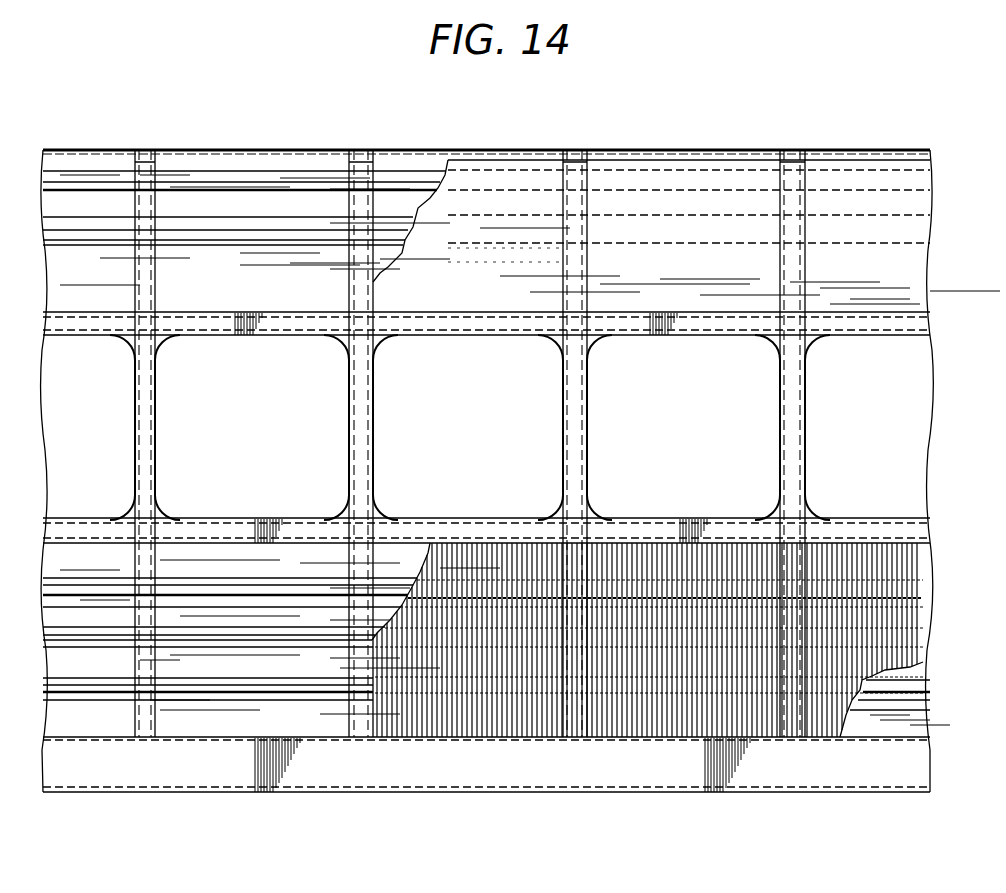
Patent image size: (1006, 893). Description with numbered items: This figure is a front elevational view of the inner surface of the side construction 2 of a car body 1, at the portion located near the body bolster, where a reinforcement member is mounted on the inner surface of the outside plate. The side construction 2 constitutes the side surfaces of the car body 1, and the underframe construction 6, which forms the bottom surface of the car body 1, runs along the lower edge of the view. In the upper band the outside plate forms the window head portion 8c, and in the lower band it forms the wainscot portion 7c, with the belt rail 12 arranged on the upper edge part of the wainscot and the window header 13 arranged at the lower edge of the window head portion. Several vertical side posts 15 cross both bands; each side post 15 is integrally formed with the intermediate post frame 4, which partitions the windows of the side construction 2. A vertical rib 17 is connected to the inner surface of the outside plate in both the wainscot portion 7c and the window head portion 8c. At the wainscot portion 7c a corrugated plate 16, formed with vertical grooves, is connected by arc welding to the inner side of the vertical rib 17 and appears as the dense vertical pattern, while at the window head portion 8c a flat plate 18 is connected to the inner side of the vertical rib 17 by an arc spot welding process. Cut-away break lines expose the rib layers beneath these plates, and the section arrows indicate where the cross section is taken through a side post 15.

The car body 1 is at (192, 148).
The side construction 2 is at (868, 197).
The intermediate post 4 is at (561, 407).
The underframe construction 6 is at (473, 770).
The wainscot portion 7c is at (220, 717).
The window head portion 8c is at (425, 160).
The belt rail 12 is at (716, 528).
The window header 13 is at (625, 335).
The side post 15 is at (336, 200).
The corrugated plate 16 is at (633, 717).
The vertical rib 17 is at (398, 180).
The flat plate 18 is at (488, 205).